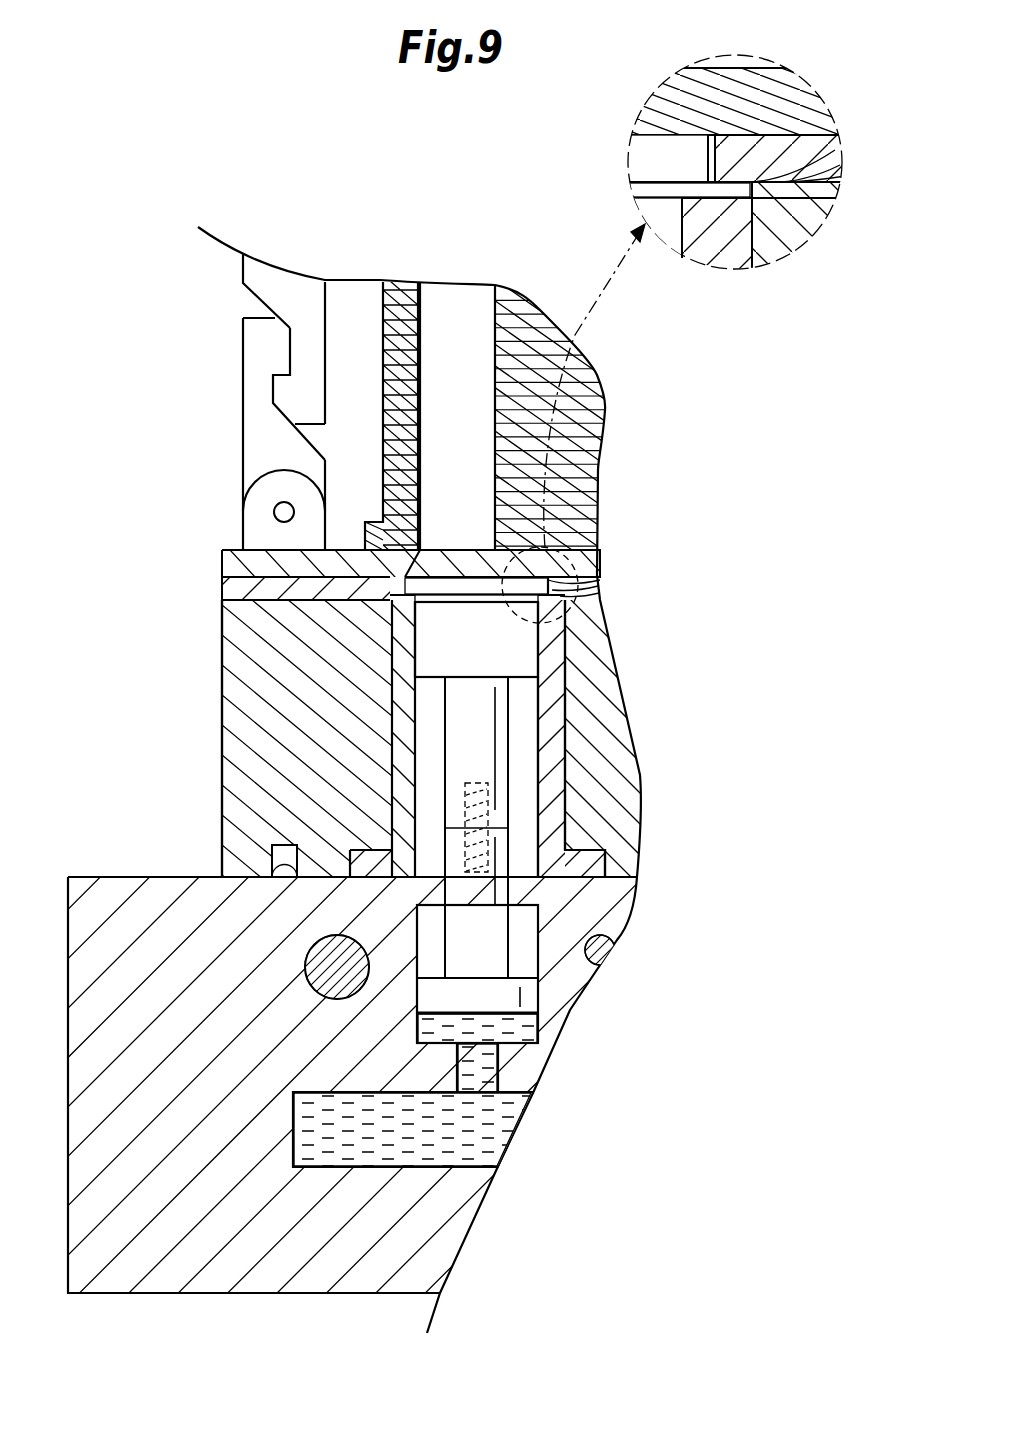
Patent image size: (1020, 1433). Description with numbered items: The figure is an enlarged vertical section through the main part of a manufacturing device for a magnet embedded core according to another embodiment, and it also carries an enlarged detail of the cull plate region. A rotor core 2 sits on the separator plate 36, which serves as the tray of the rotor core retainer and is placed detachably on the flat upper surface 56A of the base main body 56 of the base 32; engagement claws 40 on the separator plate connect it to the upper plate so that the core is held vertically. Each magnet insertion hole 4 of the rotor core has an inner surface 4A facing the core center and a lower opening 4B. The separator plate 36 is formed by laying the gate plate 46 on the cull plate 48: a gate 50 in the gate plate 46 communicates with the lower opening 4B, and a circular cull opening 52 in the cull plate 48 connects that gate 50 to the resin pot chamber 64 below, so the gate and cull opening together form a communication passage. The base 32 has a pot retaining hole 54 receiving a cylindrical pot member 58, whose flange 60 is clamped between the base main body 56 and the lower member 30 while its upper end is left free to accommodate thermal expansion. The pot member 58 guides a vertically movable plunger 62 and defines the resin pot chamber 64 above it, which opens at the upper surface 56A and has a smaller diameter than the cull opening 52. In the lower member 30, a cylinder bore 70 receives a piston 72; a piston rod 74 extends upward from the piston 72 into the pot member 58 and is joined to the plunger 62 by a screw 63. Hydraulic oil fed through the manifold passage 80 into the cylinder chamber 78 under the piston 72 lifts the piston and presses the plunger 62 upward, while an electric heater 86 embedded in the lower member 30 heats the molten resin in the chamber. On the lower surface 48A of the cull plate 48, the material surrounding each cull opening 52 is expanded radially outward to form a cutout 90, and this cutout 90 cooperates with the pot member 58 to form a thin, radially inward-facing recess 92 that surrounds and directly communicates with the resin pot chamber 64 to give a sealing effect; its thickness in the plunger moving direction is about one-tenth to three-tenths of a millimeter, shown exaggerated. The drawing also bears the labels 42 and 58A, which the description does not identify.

The rotor core 2 is at (585, 400).
The magnet insertion hole 4 is at (464, 409).
The inner surface of the magnet insertion hole 4A is at (495, 327).
The lower opening of the magnet insertion hole 4B is at (476, 639).
The lower member 30 is at (95, 925).
The base 32 is at (222, 795).
The separator plate 36 is at (212, 553).
The engagement claws 40 is at (248, 383).
The latch tip 42 is at (252, 270).
The gate plate 46 is at (565, 545).
The cull plate 48 is at (590, 597).
The lower surface of the cull plate 48A is at (810, 210).
The gate 50 is at (425, 556).
The cull opening 52 is at (545, 640).
The pot retaining hole 54 is at (560, 787).
The base main body 56 is at (778, 246).
The upper surface of the base main body 56A is at (826, 187).
The pot member 58 is at (560, 705).
The collar edge 58A is at (690, 188).
The flange 60 is at (590, 870).
The plunger 62 is at (430, 650).
The screw 63 is at (483, 790).
The resin pot chamber 64 is at (668, 228).
The cylinder bore 70 is at (527, 947).
The piston 72 is at (530, 1003).
The piston rod 74 is at (502, 927).
The cylinder chamber 78 is at (525, 1032).
The manifold passage 80 is at (335, 1153).
The electric heater 86 is at (305, 967).
The cutout 90 is at (722, 185).
The recess 92 is at (592, 582).